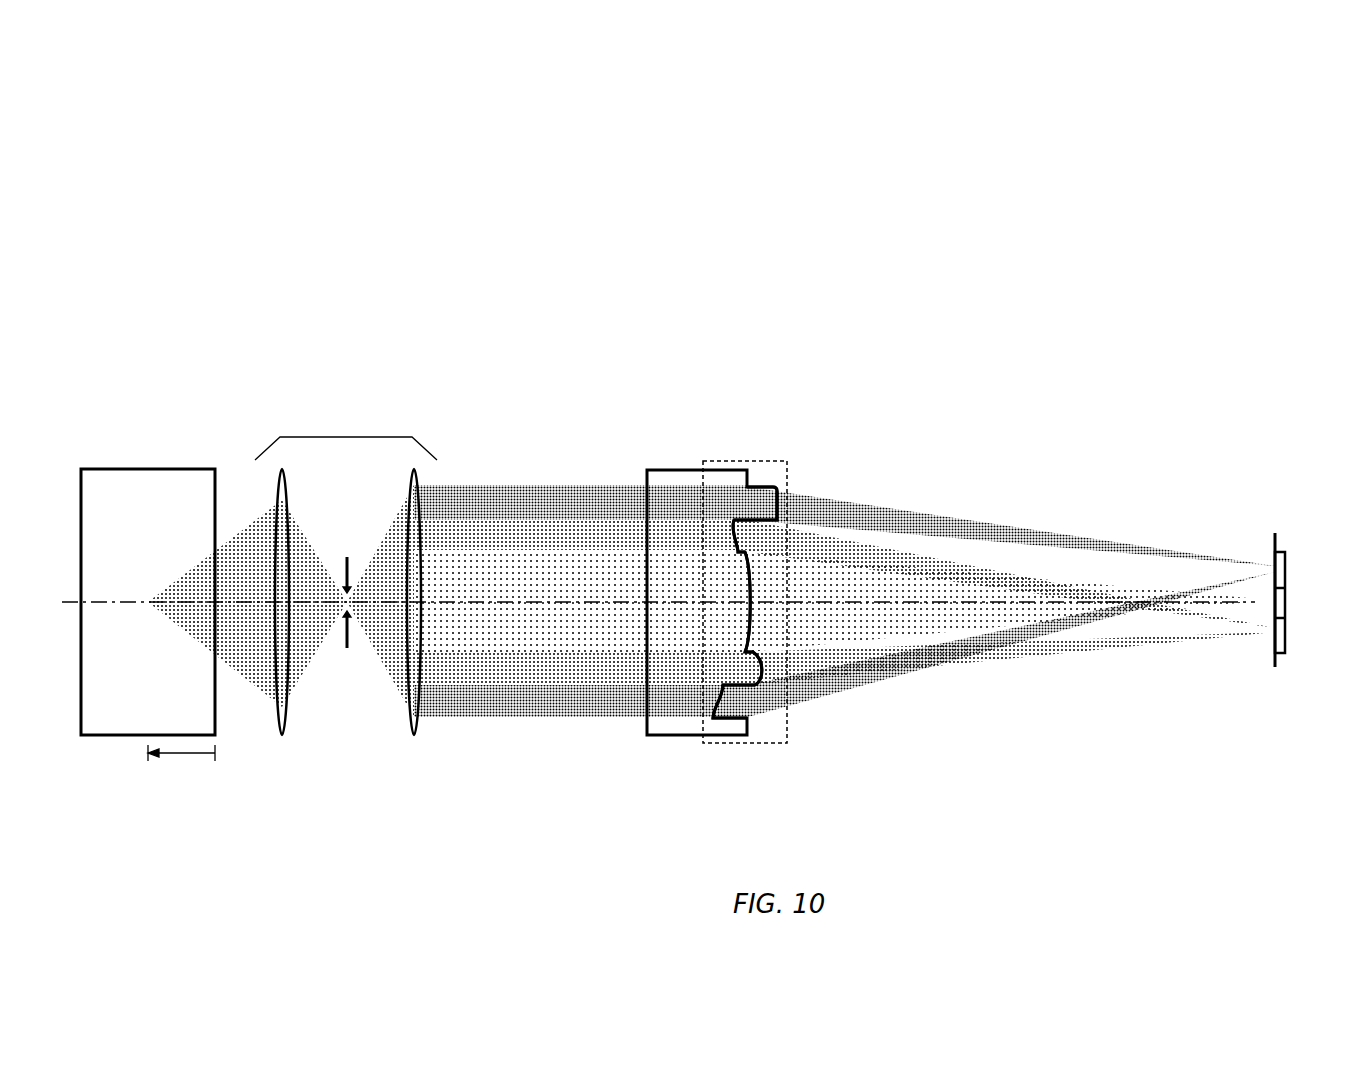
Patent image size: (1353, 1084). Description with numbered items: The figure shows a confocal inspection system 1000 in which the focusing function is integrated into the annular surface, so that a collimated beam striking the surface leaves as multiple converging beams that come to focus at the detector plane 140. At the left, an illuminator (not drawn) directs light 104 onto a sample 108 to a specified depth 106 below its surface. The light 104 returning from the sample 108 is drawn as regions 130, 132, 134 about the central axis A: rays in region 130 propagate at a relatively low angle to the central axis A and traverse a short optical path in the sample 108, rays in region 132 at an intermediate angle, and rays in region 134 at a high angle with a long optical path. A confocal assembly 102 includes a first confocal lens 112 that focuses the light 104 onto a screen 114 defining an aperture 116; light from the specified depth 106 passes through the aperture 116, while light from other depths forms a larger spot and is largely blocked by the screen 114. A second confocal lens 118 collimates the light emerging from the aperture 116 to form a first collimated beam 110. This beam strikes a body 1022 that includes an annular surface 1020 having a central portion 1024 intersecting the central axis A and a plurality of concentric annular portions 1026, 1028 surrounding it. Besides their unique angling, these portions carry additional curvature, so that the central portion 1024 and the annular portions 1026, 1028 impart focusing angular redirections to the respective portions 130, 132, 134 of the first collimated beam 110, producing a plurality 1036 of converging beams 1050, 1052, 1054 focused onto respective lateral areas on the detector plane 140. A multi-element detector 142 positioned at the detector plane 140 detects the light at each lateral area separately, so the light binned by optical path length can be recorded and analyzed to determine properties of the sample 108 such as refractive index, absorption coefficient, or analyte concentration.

The confocal inspection system 1000 is at (192, 280).
The confocal assembly 102 is at (346, 402).
The light 104 is at (242, 678).
The specified depth 106 is at (182, 763).
The sample 108 is at (148, 468).
The first collimated beam 110 is at (581, 524).
The first confocal lens 112 is at (289, 471).
The screen 114 is at (347, 556).
The aperture 116 is at (349, 650).
The second confocal lens 118 is at (408, 733).
The region of light 130 is at (497, 587).
The region of light 132 is at (497, 547).
The region of light 134 is at (497, 512).
The detector plane 140 is at (1275, 532).
The multi-element detector 142 is at (1287, 657).
The annular surface 1020 is at (715, 539).
The body 1022 is at (668, 740).
The central portion 1024 is at (748, 580).
The concentric annular portion 1026 is at (734, 536).
The concentric annular portion 1028 is at (775, 502).
The plurality of converging beams 1036 is at (1011, 542).
The converging beam 1050 is at (877, 633).
The converging beam 1052 is at (877, 560).
The converging beam 1054 is at (877, 523).
The central axis A is at (545, 608).